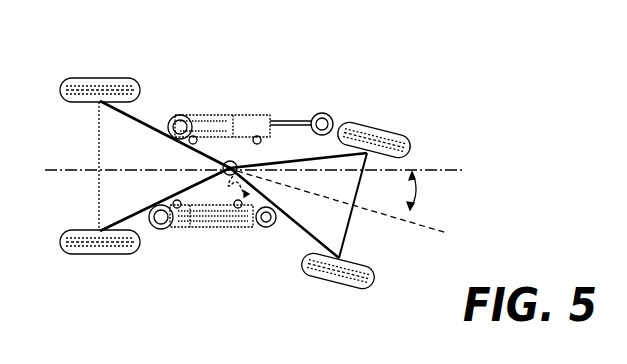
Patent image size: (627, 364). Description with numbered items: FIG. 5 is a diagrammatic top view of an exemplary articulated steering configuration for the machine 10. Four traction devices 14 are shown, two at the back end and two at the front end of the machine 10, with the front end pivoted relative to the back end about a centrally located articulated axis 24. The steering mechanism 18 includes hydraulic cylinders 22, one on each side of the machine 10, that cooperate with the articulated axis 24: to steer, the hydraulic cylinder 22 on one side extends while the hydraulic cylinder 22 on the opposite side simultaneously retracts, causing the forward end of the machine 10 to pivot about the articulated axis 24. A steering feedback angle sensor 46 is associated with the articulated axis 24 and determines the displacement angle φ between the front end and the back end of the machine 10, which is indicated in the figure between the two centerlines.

The machine 10 is at (440, 59).
The traction device 14 is at (101, 78).
The steering mechanism 18 is at (296, 103).
The hydraulic cylinder 22 is at (207, 114).
The articulated axis 24 is at (222, 172).
The steering feedback angle sensor 46 is at (228, 178).